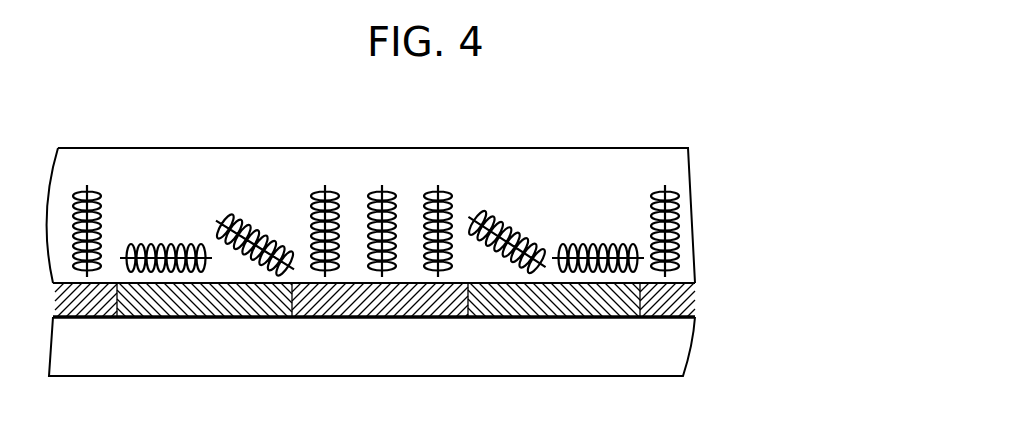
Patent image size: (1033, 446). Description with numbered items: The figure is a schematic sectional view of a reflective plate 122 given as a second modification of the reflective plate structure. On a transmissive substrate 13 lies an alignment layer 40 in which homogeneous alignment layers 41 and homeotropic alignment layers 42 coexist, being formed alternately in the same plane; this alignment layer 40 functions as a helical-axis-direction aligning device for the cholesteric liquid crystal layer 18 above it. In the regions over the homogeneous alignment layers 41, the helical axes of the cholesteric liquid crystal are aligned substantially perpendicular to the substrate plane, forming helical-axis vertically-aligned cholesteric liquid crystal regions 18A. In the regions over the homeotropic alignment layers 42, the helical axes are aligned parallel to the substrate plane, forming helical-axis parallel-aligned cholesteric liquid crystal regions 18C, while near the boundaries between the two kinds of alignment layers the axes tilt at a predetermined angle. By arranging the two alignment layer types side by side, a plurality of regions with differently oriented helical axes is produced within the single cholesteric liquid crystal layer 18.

The reflective plate 122 is at (710, 112).
The cholesteric liquid crystal layer 18 is at (657, 166).
The helical-axis parallel-aligned cholesteric liquid crystal regions 18C is at (292, 141).
The helical-axis vertically-aligned cholesteric liquid crystal regions 18A is at (465, 141).
The alignment layer 40 is at (714, 298).
The homogeneous alignment layers 41 is at (75, 318).
The homeotropic alignment layers 42 is at (198, 318).
The transmissive substrate 13 is at (668, 352).